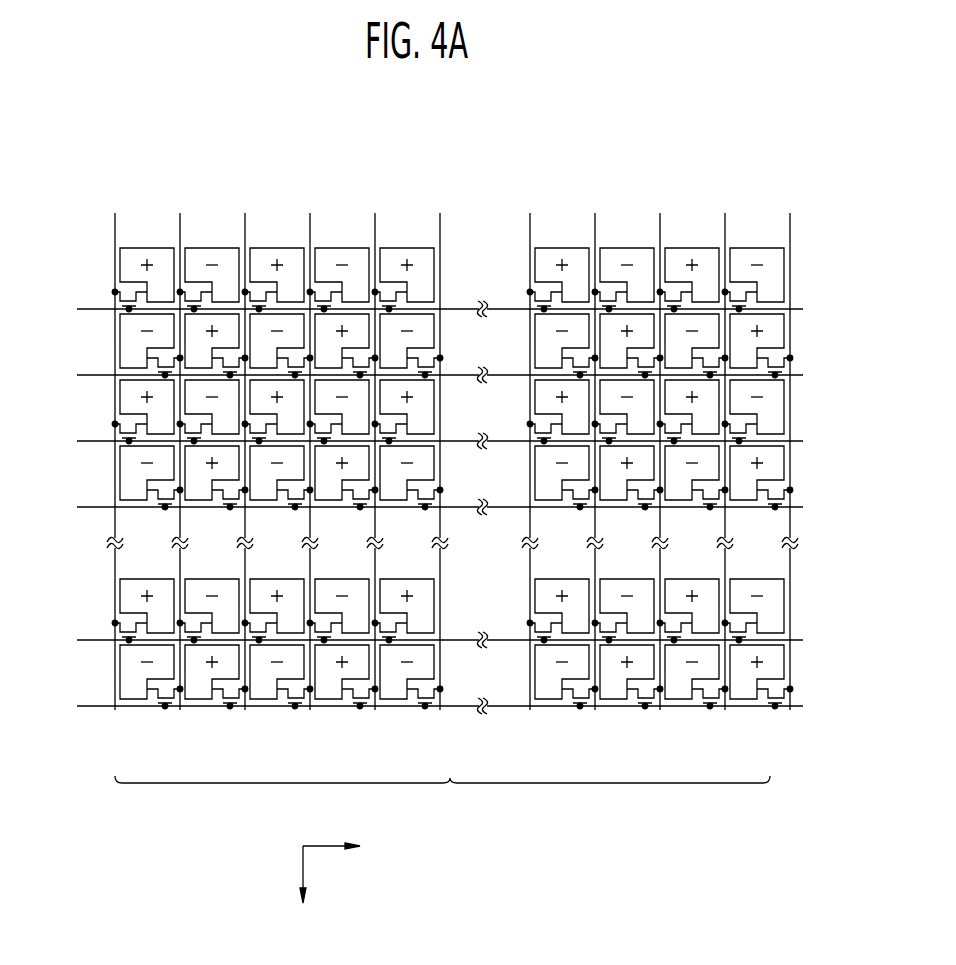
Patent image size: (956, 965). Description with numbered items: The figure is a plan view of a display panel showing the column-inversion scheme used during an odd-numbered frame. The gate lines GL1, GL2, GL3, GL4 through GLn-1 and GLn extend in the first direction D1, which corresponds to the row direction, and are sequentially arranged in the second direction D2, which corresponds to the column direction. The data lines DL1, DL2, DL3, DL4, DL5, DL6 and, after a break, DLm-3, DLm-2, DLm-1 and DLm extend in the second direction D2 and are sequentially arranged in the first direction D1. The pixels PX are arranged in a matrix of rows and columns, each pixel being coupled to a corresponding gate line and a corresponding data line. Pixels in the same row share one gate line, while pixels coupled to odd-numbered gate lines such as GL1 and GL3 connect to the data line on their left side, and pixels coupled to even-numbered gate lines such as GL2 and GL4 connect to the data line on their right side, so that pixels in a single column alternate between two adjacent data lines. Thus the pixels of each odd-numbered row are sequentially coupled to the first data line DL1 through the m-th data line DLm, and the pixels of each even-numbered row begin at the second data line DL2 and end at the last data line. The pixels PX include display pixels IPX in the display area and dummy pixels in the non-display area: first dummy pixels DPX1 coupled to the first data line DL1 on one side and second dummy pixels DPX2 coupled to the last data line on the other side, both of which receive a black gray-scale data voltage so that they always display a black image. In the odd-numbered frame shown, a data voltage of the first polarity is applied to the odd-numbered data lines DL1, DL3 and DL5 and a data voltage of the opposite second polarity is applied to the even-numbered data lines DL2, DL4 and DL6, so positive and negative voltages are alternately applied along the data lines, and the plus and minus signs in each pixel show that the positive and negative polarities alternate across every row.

The first data line DL1 is at (115, 450).
The second data line DL2 is at (180, 450).
The third data line DL3 is at (245, 450).
The fourth data line DL4 is at (310, 450).
The fifth data line DL5 is at (375, 450).
The sixth data line DL6 is at (440, 450).
The (m-3)-th data line DLm-3 is at (530, 450).
The (m-2)-th data line DLm-2 is at (595, 450).
The (m-1)-th data line DLm-1 is at (660, 450).
The m-th data line DLm is at (725, 450).
The first gate line GL1 is at (422, 309).
The second gate line GL2 is at (422, 375).
The third gate line GL3 is at (422, 441).
The fourth gate line GL4 is at (422, 507).
The (n-1)-th gate line GLn-1 is at (411, 640).
The n-th gate line GLn is at (420, 706).
The pixels PX is at (452, 532).
The first dummy pixels DPX1 is at (137, 692).
The display pixels IPX is at (330, 692).
The second dummy pixels DPX2 is at (747, 692).
The first direction D1 is at (342, 848).
The second direction D2 is at (301, 889).